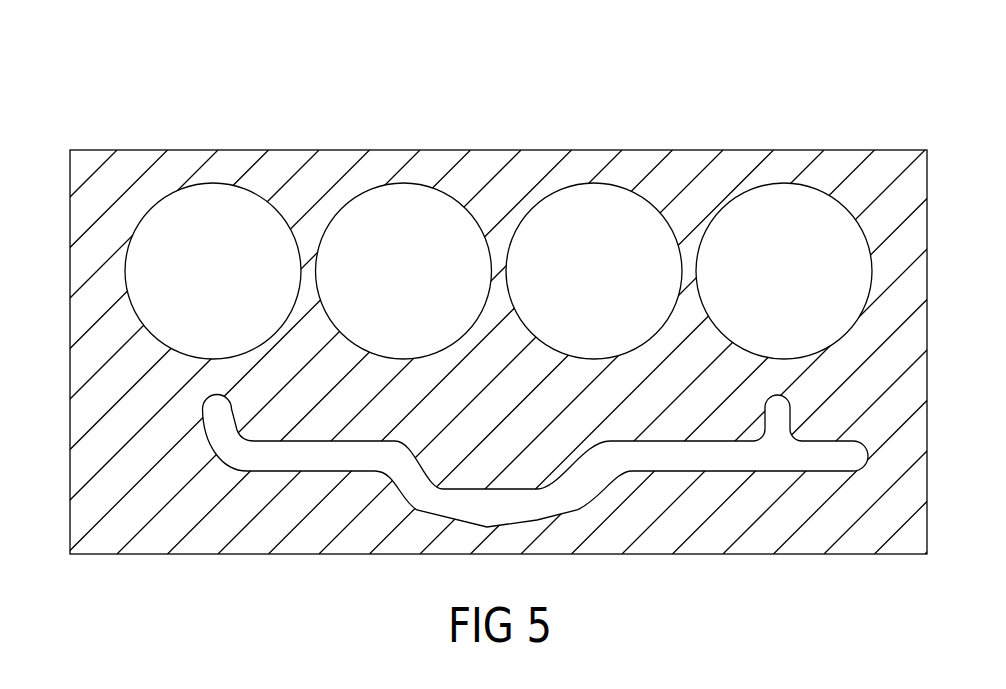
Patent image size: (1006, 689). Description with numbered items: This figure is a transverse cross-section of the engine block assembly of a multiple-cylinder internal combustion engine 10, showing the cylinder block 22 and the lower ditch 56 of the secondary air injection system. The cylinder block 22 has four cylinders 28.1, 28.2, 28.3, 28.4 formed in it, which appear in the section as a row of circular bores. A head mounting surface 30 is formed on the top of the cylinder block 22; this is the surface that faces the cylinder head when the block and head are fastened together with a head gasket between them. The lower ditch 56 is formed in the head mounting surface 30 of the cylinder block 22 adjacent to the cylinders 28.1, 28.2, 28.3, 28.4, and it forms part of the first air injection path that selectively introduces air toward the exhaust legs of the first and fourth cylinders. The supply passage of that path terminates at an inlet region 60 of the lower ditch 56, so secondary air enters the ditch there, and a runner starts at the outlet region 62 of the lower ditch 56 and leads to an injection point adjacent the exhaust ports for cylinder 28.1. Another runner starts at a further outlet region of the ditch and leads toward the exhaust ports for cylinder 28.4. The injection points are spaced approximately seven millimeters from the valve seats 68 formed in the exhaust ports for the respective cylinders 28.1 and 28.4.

The internal combustion engine 10 is at (95, 126).
The cylinder block 22 is at (903, 190).
The first cylinder 28.1 is at (189, 283).
The second cylinder 28.2 is at (428, 283).
The third cylinder 28.3 is at (570, 283).
The fourth cylinder 28.4 is at (760, 283).
The head mounting surface 30 is at (874, 524).
The lower ditch 56 is at (618, 486).
The inlet region 60 is at (852, 456).
The outlet region 62 is at (217, 411).
The valve seats 68 is at (778, 410).